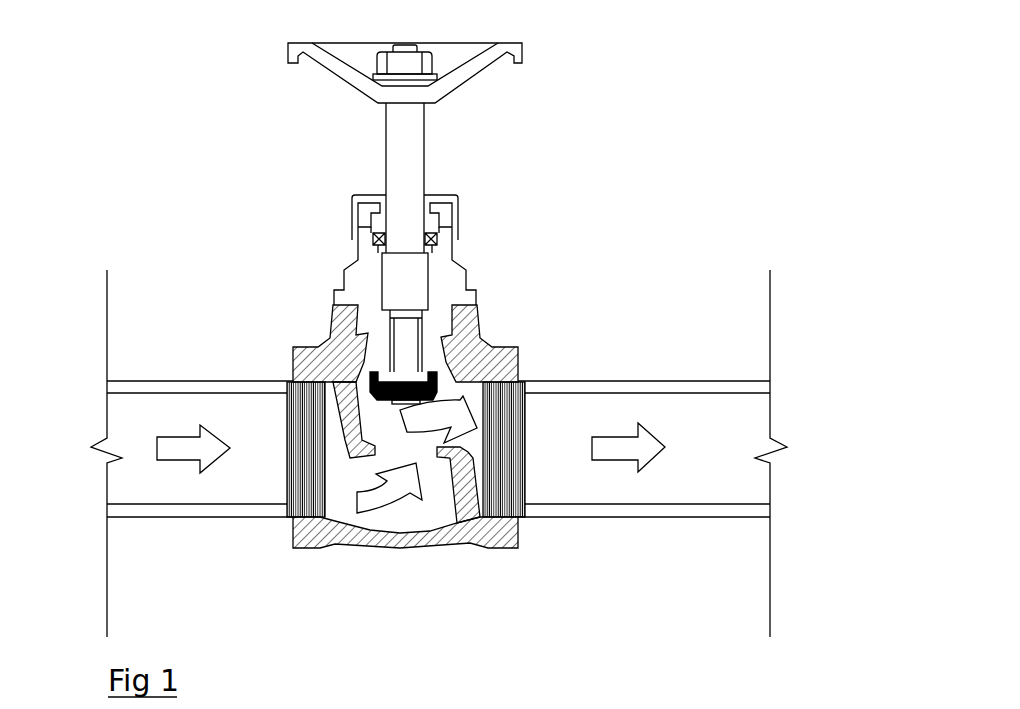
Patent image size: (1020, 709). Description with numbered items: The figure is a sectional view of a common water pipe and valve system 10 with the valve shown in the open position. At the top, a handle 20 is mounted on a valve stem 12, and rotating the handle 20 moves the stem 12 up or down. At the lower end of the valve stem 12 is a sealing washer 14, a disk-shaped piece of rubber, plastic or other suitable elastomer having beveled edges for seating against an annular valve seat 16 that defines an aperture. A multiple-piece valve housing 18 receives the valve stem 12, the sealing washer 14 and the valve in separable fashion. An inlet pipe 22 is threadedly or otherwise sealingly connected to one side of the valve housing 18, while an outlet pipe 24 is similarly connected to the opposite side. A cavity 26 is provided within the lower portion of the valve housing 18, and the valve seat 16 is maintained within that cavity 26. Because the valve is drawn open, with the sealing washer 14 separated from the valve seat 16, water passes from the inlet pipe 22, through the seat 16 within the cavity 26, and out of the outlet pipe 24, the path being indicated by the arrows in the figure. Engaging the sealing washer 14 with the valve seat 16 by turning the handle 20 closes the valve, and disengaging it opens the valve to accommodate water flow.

The water pipe and valve system 10 is at (634, 208).
The valve stem 12 is at (426, 176).
The sealing washer 14 is at (443, 380).
The valve seat 16 is at (447, 463).
The valve housing 18 is at (461, 258).
The handle 20 is at (511, 42).
The inlet pipe 22 is at (160, 383).
The outlet pipe 24 is at (606, 382).
The cavity 26 is at (416, 522).